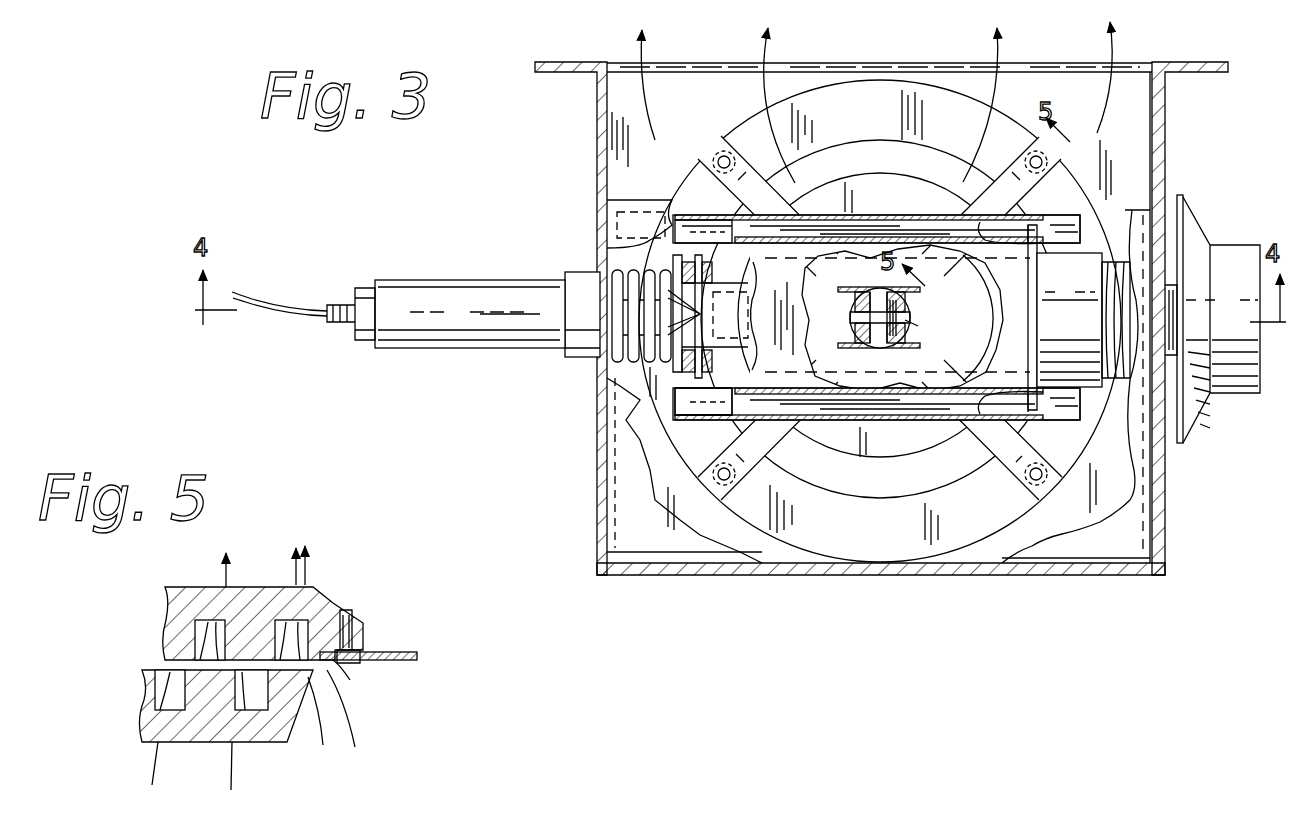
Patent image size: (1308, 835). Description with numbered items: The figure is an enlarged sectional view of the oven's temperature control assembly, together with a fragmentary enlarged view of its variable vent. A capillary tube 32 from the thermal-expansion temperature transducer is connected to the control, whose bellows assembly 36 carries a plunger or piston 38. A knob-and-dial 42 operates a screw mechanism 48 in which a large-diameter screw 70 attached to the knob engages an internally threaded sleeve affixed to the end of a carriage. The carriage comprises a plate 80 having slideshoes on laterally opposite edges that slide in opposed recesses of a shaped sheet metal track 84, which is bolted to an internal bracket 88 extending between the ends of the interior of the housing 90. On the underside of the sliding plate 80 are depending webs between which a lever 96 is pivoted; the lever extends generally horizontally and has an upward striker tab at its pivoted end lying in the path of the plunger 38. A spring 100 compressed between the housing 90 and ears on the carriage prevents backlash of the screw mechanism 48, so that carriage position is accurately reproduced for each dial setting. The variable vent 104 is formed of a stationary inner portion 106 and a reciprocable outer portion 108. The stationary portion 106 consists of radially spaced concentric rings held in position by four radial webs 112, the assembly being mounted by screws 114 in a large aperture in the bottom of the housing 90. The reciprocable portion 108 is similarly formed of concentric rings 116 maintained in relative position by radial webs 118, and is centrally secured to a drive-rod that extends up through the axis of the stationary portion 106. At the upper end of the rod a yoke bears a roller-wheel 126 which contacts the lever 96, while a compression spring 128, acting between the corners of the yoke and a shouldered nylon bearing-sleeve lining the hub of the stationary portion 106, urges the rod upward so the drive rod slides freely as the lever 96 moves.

In FIG. 3, the capillary tube 32 is at (247, 300).
In FIG. 3, the bellows assembly 36 is at (440, 309).
In FIG. 3, the plunger 38 is at (731, 315).
In FIG. 3, the knob-and-dial 42 is at (1252, 294).
In FIG. 3, the screw mechanism 48 is at (1097, 397).
In FIG. 3, the large-diameter screw 70 is at (1038, 262).
In FIG. 3, the plate 80 is at (1037, 285).
In FIG. 3, the track 84 is at (892, 424).
In FIG. 3, the internal bracket 88 is at (626, 200).
In FIG. 3, the housing 90 is at (600, 466).
In FIG. 3, the lever 96 is at (832, 307).
In FIG. 3, the spring 100 is at (600, 378).
In FIG. 5, the variable vent 104 is at (352, 682).
In FIG. 3, the stationary inner portion 106 is at (722, 448).
In FIG. 5, the stationary inner portion 106 is at (333, 605).
In FIG. 5, the reciprocable outer portion 108 is at (275, 700).
In FIG. 3, the radial webs 112 is at (770, 158).
In FIG. 5, the radial webs 112 is at (272, 588).
In FIG. 3, the screws 114 is at (722, 150).
In FIG. 5, the screws 114 is at (352, 663).
In FIG. 3, the concentric rings 116 is at (900, 494).
In FIG. 5, the concentric rings 116 is at (237, 704).
In FIG. 5, the radial webs 118 is at (225, 744).
In FIG. 3, the roller-wheel 126 is at (885, 320).
In FIG. 3, the compression spring 128 is at (920, 328).